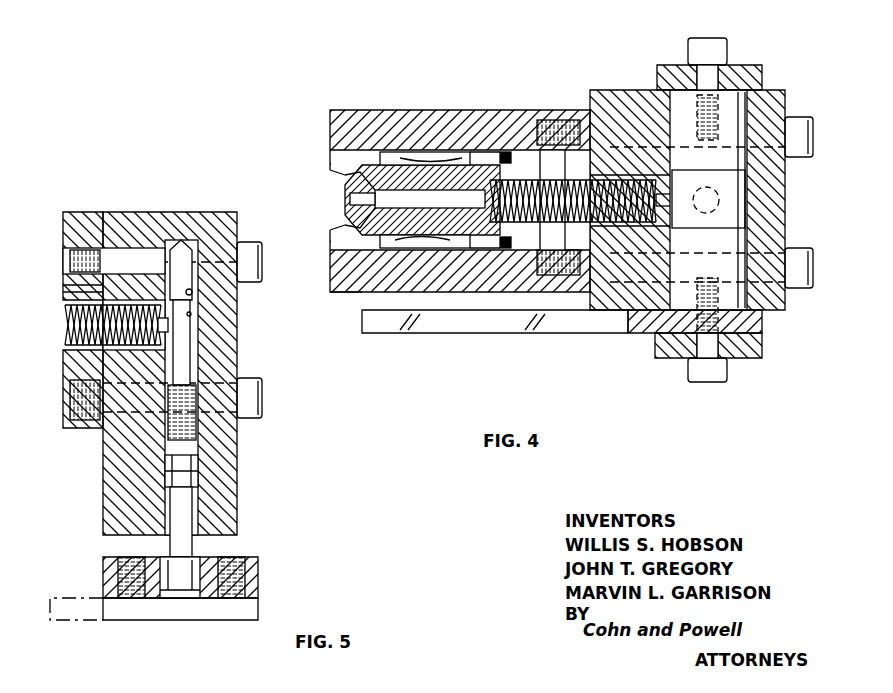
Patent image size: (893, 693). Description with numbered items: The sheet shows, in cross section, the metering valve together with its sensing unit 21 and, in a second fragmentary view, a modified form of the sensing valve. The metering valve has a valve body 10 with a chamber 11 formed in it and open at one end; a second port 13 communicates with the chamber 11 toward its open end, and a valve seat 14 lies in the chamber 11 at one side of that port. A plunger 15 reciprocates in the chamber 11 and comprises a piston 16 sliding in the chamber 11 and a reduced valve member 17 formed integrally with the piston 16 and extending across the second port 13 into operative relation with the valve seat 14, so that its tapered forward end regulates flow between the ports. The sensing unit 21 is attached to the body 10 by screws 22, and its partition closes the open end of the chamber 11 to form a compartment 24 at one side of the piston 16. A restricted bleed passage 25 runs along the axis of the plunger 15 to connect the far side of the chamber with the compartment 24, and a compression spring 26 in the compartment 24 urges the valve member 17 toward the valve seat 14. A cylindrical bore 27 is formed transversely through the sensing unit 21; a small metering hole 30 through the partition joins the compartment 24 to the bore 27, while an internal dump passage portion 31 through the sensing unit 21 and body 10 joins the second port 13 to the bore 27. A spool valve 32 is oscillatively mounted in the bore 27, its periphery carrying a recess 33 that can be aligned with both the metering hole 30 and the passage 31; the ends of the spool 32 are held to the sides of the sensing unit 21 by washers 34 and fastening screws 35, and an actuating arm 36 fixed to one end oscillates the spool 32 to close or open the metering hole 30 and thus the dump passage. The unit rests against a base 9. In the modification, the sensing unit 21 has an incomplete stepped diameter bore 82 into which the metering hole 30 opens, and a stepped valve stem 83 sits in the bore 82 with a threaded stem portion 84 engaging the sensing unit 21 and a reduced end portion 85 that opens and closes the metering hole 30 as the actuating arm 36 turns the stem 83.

In FIG. 4, the mounting base 9 is at (348, 304).
In FIG. 5, the mounting base 9 is at (56, 411).
In FIG. 4, the valve body 10 is at (368, 114).
In FIG. 5, the valve body 10 is at (84, 428).
In FIG. 4, the chamber 11 is at (340, 228).
In FIG. 4, the second port 13 is at (399, 242).
In FIG. 4, the valve seat 14 is at (340, 178).
In FIG. 4, the plunger 15 is at (455, 242).
In FIG. 4, the piston 16 is at (487, 158).
In FIG. 4, the valve member 17 is at (397, 160).
In FIG. 4, the sensing unit 21 is at (622, 82).
In FIG. 5, the sensing unit 21 is at (167, 204).
In FIG. 4, the screws 22 is at (803, 117).
In FIG. 5, the screws 22 is at (264, 397).
In FIG. 4, the compartment 24 is at (552, 160).
In FIG. 5, the compartment 24 is at (66, 295).
In FIG. 4, the restricted bleed passage 25 is at (352, 200).
In FIG. 4, the compression spring 26 is at (606, 175).
In FIG. 5, the compression spring 26 is at (66, 333).
In FIG. 4, the cylindrical bore 27 is at (747, 180).
In FIG. 4, the metering hole 30 is at (652, 186).
In FIG. 5, the metering hole 30 is at (162, 318).
In FIG. 4, the internal dump passage portion 31 is at (463, 192).
In FIG. 5, the internal dump passage portion 31 is at (80, 255).
In FIG. 4, the spool valve 32 is at (740, 232).
In FIG. 4, the recess 33 is at (622, 222).
In FIG. 4, the washers 34 is at (750, 72).
In FIG. 4, the fastening screws 35 is at (705, 38).
In FIG. 4, the actuating arm 36 is at (432, 333).
In FIG. 5, the actuating arm 36 is at (75, 620).
In FIG. 5, the stepped diameter bore 82 is at (192, 292).
In FIG. 5, the valve stem 83 is at (190, 513).
In FIG. 5, the threaded stem portion 84 is at (200, 428).
In FIG. 5, the reduced end portion 85 is at (192, 314).